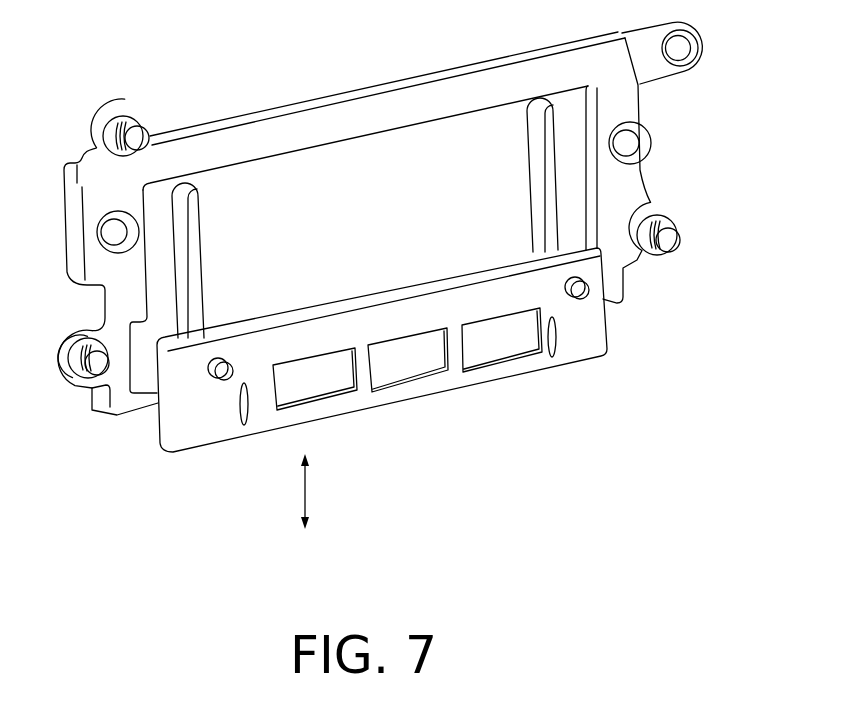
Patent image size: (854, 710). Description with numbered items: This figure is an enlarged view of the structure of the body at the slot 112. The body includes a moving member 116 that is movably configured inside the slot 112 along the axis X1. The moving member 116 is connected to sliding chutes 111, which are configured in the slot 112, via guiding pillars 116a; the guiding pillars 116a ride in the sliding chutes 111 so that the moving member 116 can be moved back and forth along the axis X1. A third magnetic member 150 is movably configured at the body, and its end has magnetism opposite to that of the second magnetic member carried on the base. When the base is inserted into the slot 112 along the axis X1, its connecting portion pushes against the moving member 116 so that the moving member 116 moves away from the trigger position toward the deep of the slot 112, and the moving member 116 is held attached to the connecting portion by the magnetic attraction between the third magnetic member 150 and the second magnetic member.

The sliding chute 111 is at (540, 193).
The slot 112 is at (510, 232).
The moving member 116 is at (588, 337).
The guiding pillar 116a is at (583, 292).
The third magnetic member 150 is at (493, 348).
The axis X1 is at (303, 488).